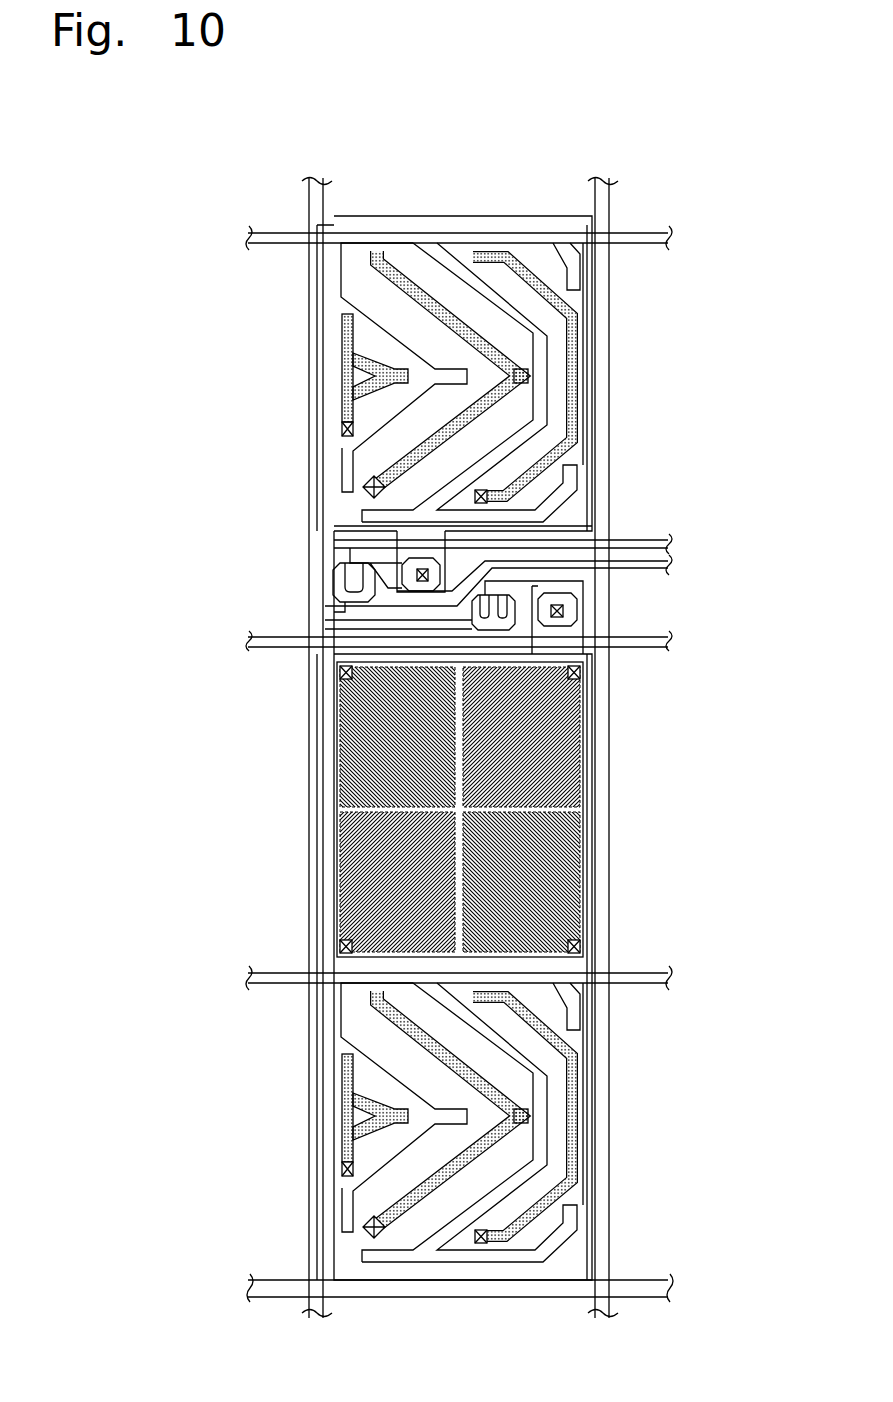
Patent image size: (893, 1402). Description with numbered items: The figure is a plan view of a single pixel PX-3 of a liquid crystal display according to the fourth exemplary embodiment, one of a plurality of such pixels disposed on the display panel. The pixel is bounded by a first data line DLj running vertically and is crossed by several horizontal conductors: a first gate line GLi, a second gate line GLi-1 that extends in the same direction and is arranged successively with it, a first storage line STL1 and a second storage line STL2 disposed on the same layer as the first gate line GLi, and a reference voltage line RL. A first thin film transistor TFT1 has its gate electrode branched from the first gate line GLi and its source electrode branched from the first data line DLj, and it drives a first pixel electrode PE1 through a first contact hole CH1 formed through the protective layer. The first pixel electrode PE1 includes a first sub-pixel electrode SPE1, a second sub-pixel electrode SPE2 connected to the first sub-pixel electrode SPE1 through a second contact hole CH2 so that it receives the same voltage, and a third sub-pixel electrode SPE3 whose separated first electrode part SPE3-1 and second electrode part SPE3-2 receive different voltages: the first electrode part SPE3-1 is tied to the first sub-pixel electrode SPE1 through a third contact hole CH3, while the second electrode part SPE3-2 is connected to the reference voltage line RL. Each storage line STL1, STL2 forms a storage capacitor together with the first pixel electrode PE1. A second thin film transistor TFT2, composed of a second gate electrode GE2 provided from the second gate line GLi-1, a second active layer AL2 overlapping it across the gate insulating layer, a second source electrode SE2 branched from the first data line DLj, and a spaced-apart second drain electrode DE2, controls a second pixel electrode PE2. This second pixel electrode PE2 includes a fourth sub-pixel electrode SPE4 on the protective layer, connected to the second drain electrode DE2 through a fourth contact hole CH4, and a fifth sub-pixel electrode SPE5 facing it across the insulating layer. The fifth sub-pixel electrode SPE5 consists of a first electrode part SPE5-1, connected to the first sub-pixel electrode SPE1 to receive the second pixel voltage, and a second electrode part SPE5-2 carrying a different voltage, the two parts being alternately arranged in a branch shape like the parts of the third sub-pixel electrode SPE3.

The first data line DLj is at (318, 176).
The pixel PX-3 is at (679, 140).
The reference voltage line RL is at (670, 240).
The first storage line STL1 is at (672, 544).
The second gate line GLi-1 is at (672, 567).
The first gate line GLi is at (672, 643).
The second storage line STL2 is at (672, 1290).
The second pixel electrode PE2 is at (116, 315).
The fourth sub-pixel electrode SPE4 is at (340, 323).
The fifth sub-pixel electrode SPE5 is at (184, 405).
The first electrode part SPE5-1 is at (345, 411).
The second electrode part SPE5-2 is at (345, 460).
The second thin film transistor TFT2 is at (171, 539).
The fourth contact hole CH4 is at (420, 568).
The second drain electrode DE2 is at (360, 566).
The second active layer AL2 is at (336, 578).
The second gate electrode GE2 is at (340, 593).
The second source electrode SE2 is at (340, 602).
The first thin film transistor TFT1 is at (587, 617).
The first contact hole CH1 is at (577, 612).
The second contact hole CH2 is at (584, 672).
The first pixel electrode PE1 is at (118, 1060).
The first sub-pixel electrode SPE1 is at (398, 809).
The second sub-pixel electrode SPE2 is at (336, 846).
The third sub-pixel electrode SPE3 is at (184, 1020).
The first electrode part SPE3-1 is at (345, 1080).
The second electrode part SPE3-2 is at (345, 1025).
The third contact hole CH3 is at (344, 1168).